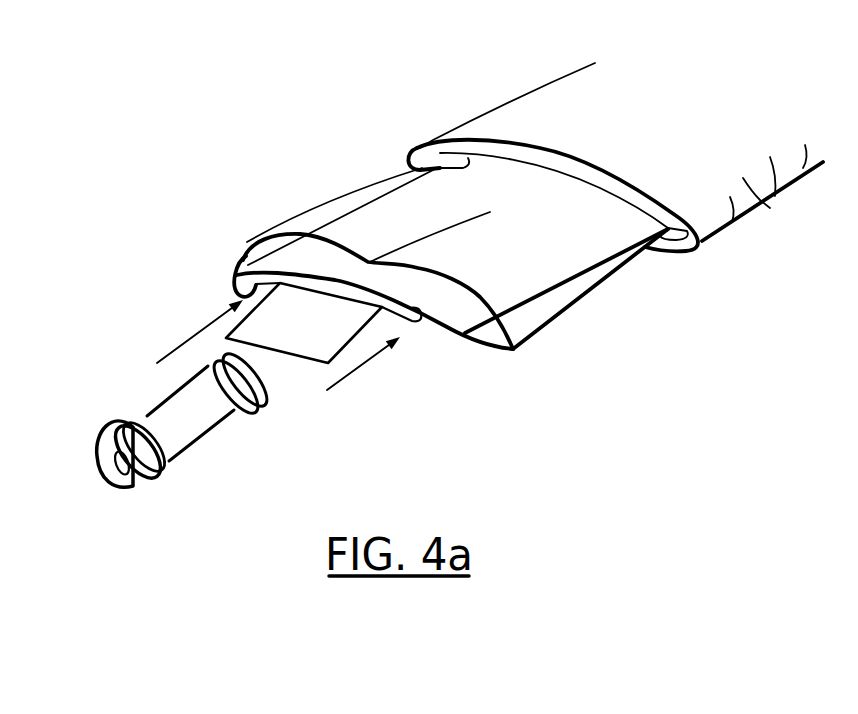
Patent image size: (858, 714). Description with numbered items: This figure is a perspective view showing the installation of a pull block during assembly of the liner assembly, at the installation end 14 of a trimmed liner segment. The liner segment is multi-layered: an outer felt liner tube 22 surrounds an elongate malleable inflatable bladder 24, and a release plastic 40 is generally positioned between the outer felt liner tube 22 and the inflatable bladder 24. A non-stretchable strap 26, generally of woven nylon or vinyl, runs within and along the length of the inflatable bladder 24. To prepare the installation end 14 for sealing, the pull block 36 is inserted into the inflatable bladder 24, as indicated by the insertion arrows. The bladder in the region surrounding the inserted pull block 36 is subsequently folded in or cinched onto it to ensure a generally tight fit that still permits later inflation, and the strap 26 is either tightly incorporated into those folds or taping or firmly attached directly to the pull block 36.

The installation end 14 is at (337, 158).
The outer felt liner tube 22 is at (775, 196).
The inflatable bladder 24 is at (460, 320).
The non-stretchable strap 26 is at (283, 332).
The pull block 36 is at (143, 477).
The release plastic 40 is at (542, 312).